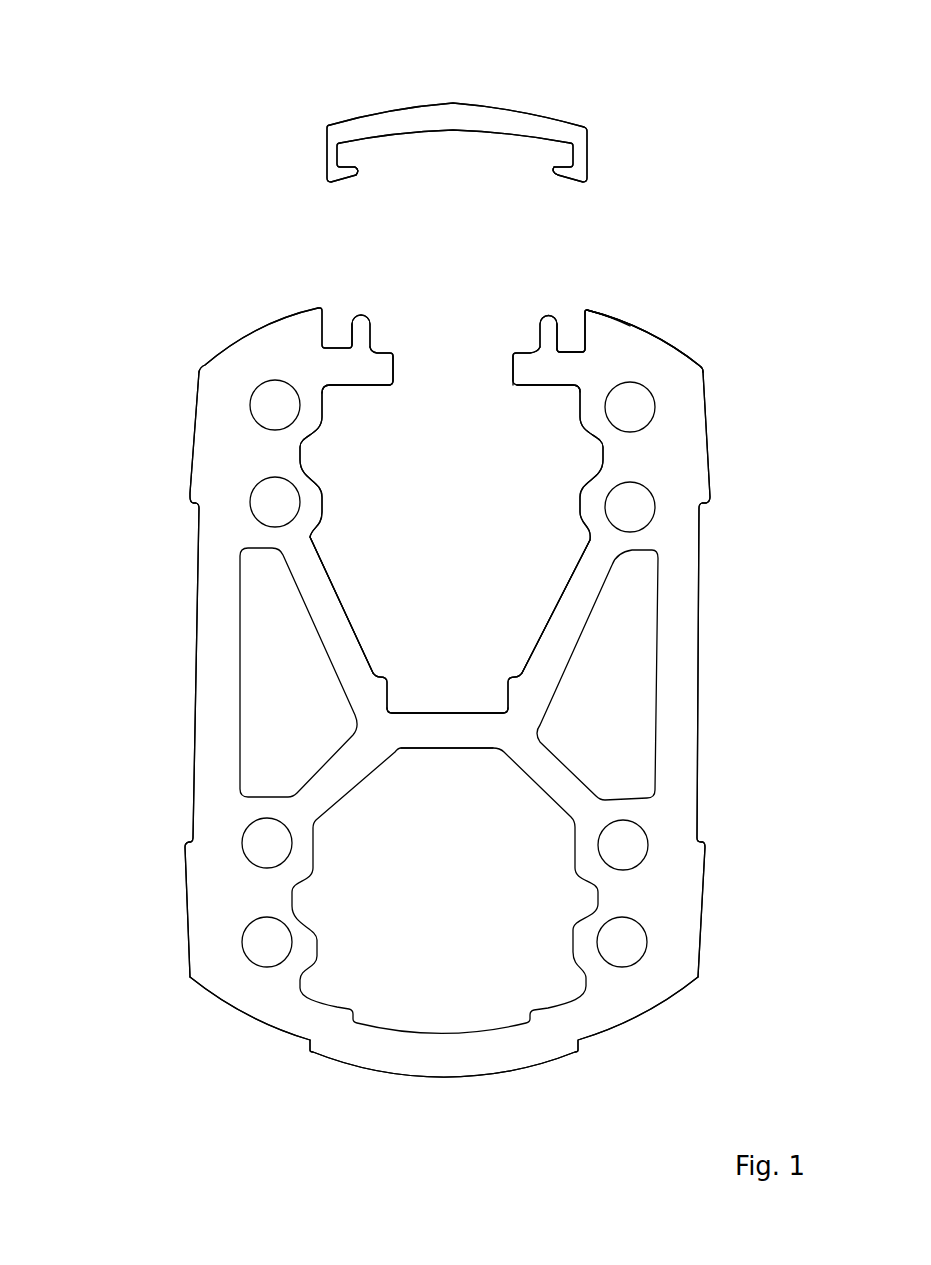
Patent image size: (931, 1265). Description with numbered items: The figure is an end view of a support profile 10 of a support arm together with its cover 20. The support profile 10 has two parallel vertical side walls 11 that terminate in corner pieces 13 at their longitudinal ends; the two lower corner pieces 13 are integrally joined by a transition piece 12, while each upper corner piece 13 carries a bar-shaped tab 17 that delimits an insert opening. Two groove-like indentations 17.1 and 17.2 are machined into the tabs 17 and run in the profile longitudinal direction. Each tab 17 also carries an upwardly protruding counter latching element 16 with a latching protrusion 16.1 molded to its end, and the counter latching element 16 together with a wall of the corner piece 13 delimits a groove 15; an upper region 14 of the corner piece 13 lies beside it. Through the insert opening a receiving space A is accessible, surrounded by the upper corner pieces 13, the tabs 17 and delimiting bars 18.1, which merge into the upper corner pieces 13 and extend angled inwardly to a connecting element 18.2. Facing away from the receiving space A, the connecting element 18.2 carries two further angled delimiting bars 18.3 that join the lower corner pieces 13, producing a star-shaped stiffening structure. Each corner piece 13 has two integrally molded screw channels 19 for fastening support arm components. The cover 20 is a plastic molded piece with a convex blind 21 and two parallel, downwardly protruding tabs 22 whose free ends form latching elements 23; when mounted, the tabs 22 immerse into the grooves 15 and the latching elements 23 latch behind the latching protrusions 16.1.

The support profile 10 is at (143, 690).
The side walls 11 is at (208, 647).
The transition piece 12 is at (470, 1063).
The corner pieces 13 is at (232, 375).
The upper head region 14 is at (570, 370).
The groove 15 is at (577, 302).
The counter latching element 16 is at (353, 332).
The latching protrusion 16.1 is at (350, 327).
The tab 17 is at (525, 368).
The indentation 17.1 is at (525, 393).
The indentation 17.2 is at (525, 345).
The delimiting bars 18.1 is at (552, 655).
The connecting element 18.2 is at (450, 733).
The delimiting bars 18.3 is at (337, 783).
The screw channels 19 is at (260, 503).
The cover 20 is at (449, 84).
The convex blind 21 is at (491, 120).
The tabs 22 is at (327, 158).
The latching elements 23 is at (358, 165).
The receiving space A is at (503, 568).